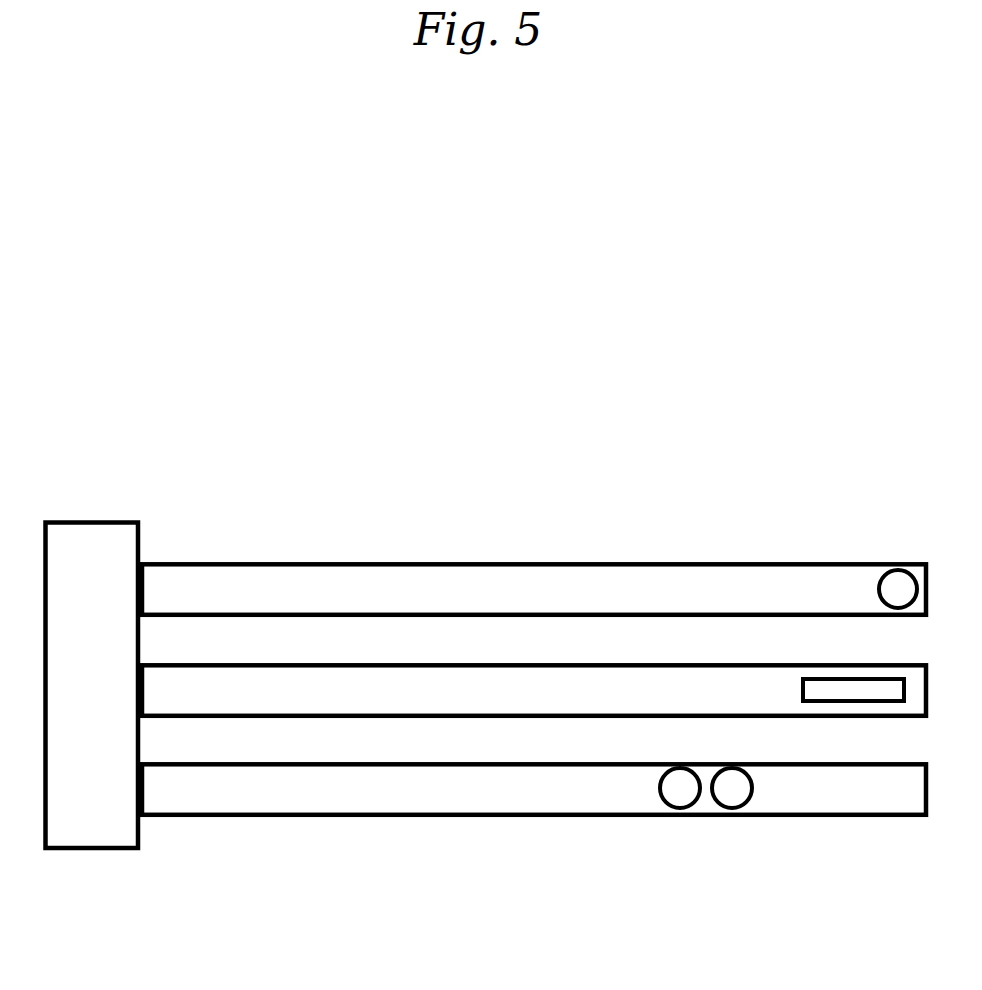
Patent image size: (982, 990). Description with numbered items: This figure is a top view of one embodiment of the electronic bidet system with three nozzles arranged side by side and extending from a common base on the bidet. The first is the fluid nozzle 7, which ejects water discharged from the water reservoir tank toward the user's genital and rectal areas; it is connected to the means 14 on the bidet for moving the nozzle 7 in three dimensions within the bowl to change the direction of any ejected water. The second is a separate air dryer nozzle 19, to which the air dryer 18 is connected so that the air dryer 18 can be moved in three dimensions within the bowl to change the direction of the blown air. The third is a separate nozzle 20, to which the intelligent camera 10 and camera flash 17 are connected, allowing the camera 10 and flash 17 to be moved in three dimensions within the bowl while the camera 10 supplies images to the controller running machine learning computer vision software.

The fluid nozzle 7 is at (896, 592).
The intelligent camera 10 is at (733, 792).
The means for moving the nozzle in three-dimensions 14 is at (232, 592).
The camera flash 17 is at (670, 792).
The air dryer 18 is at (826, 677).
The air dryer nozzle 19 is at (377, 678).
The nozzle 20 is at (422, 807).